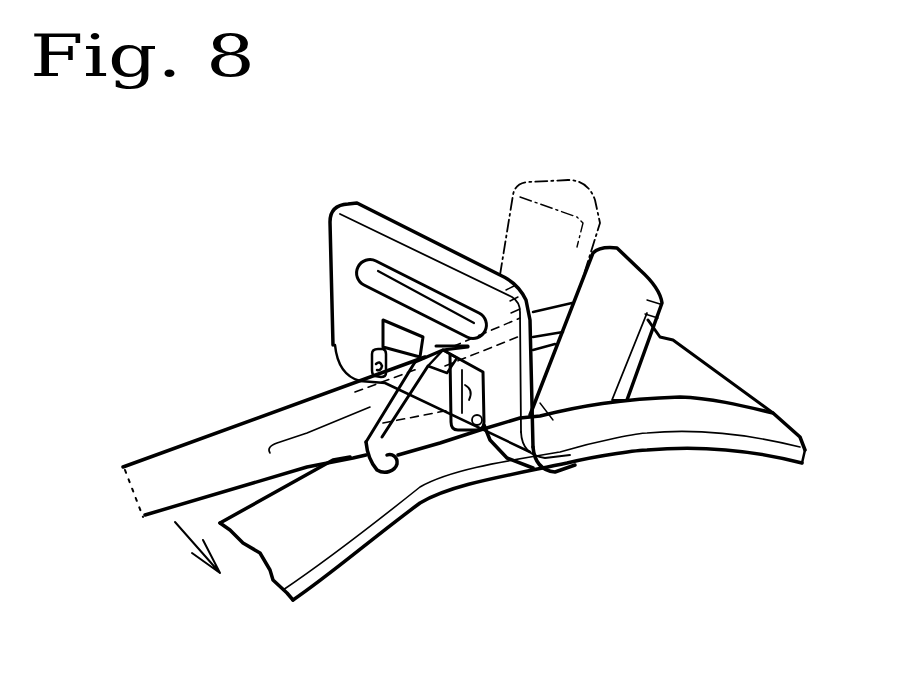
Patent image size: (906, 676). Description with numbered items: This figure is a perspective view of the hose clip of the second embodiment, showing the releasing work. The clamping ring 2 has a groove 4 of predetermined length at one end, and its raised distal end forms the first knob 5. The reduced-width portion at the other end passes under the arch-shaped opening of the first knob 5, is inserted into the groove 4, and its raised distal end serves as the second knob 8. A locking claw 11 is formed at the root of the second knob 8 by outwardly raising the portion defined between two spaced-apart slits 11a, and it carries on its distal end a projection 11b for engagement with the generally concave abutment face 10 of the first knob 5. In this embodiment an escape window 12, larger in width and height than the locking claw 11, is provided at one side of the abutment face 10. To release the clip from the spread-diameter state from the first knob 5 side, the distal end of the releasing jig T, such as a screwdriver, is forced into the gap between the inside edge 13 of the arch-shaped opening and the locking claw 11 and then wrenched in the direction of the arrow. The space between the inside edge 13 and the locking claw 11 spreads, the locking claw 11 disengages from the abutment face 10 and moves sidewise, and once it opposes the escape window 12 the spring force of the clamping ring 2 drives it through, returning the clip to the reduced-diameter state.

The clamping ring 2 is at (693, 425).
The groove 4 is at (690, 380).
The first knob 5 is at (353, 243).
The second knob 8 is at (566, 195).
The abutment face 10 is at (383, 334).
The locking claw 11 is at (417, 427).
The slits 11a is at (396, 473).
The projection 11b is at (441, 349).
The escape window 12 is at (573, 467).
The inside edge 13 is at (352, 372).
The releasing jig T is at (157, 467).